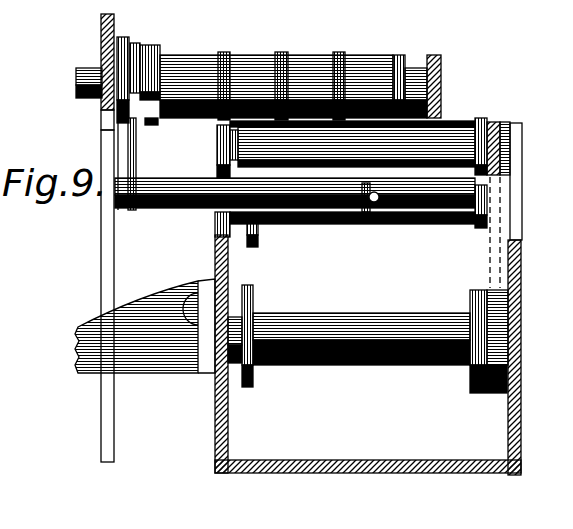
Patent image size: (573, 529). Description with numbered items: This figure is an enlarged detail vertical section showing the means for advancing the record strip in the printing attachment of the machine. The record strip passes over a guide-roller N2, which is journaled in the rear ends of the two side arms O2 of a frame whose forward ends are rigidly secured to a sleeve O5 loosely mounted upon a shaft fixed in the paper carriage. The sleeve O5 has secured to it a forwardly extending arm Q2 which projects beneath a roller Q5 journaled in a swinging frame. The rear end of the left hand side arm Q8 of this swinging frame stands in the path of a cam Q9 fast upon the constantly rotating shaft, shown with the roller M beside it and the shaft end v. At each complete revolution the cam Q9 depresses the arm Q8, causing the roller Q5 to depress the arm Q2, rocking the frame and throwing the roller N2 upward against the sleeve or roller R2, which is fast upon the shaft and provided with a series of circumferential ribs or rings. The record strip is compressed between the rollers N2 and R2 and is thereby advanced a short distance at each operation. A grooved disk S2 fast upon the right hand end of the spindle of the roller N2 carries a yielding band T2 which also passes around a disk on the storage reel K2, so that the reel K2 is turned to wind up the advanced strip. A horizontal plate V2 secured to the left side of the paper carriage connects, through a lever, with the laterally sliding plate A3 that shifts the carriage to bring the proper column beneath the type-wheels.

The shaft end v is at (90, 63).
The gear M is at (128, 37).
The cam Q9 is at (160, 42).
The sleeve or roller R2 is at (315, 57).
The laterally sliding plate A3 is at (396, 30).
The guide-roller N2 is at (443, 147).
The grooved disk S2 is at (497, 133).
The left hand side arm Q8 is at (137, 146).
The roller Q5 is at (186, 180).
The yielding band T2 is at (502, 205).
The sleeve O5 is at (404, 226).
The side arms O2 is at (478, 228).
The forwardly extending arm Q2 is at (262, 238).
The storage reel K2 is at (383, 320).
The horizontal plate V2 is at (168, 362).